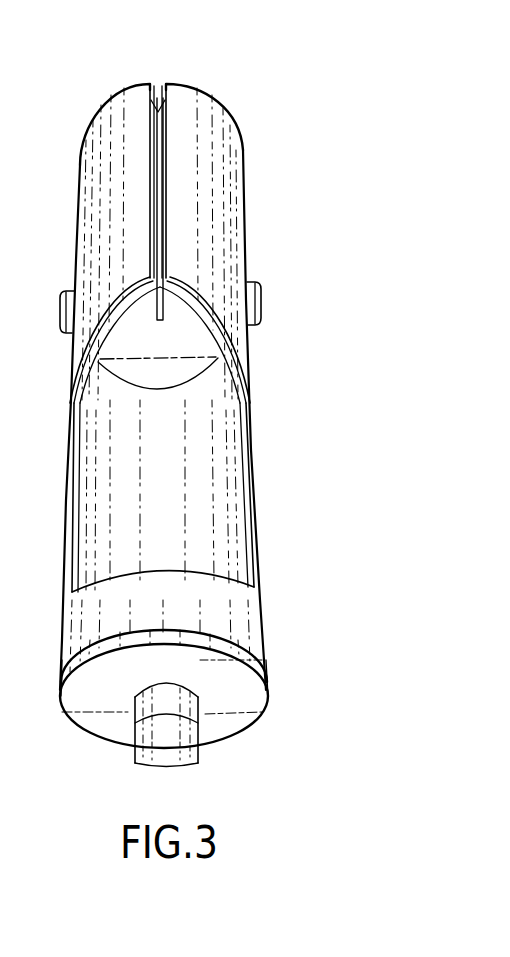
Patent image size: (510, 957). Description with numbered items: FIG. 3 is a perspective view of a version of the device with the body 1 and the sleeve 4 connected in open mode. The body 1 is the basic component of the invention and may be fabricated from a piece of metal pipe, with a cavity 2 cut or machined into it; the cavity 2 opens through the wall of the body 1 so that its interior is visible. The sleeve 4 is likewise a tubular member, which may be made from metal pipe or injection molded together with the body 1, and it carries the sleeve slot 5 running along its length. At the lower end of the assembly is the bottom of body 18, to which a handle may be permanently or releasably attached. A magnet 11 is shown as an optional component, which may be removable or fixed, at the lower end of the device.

The body 1 is at (264, 630).
The cavity 2 is at (215, 480).
The sleeve 4 is at (243, 193).
The sleeve slot 5 is at (157, 84).
The magnet 11 is at (88, 718).
The bottom of body 18 is at (253, 707).